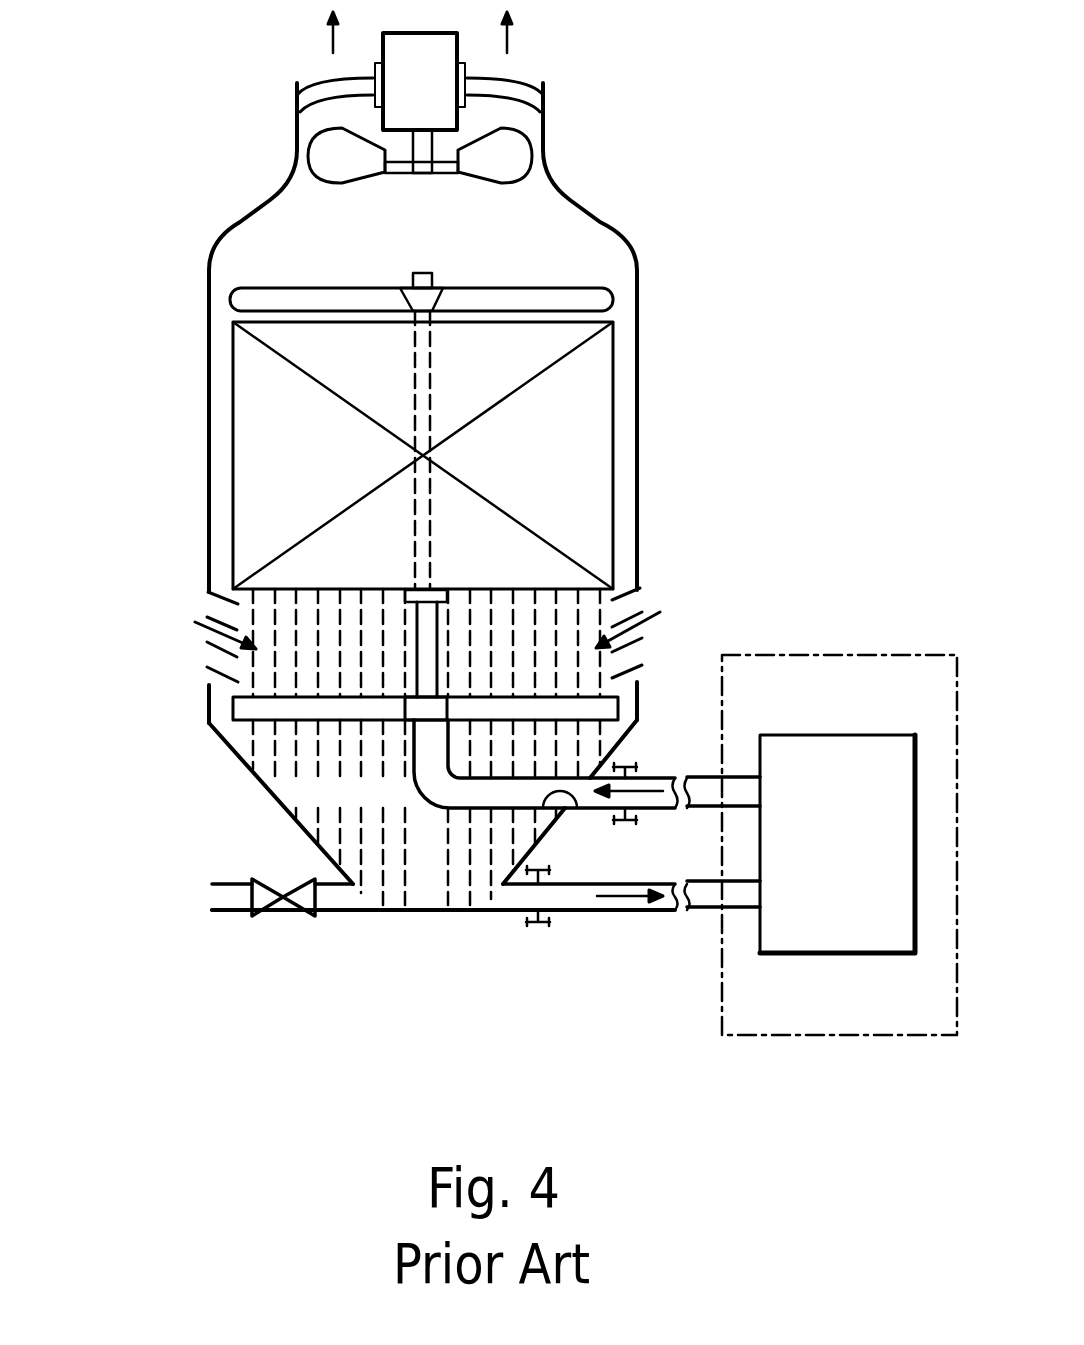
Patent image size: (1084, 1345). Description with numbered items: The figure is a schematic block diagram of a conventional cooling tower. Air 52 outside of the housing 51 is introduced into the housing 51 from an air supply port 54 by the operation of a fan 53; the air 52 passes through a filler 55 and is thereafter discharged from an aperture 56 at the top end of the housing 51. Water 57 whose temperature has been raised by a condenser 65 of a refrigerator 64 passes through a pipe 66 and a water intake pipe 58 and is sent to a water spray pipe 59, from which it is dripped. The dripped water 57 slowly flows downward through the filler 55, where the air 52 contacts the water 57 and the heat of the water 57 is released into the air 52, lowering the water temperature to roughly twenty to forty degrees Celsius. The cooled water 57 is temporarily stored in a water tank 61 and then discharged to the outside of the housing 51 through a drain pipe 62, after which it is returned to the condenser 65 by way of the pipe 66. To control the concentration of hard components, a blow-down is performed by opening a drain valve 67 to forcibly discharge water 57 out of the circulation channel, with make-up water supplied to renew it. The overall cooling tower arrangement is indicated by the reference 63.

The housing 51 is at (617, 228).
The air 52 is at (197, 629).
The fan 53 is at (519, 152).
The air supply port 54 is at (209, 593).
The filler 55 is at (597, 432).
The aperture 56 is at (540, 82).
The water 57 is at (318, 802).
The water intake pipe 58 is at (573, 810).
The water spray pipe 59 is at (612, 298).
The water tank 61 is at (232, 752).
The drain pipe 62 is at (505, 912).
The cooling tower 63 is at (197, 242).
The refrigerator 64 is at (805, 1035).
The condenser 65 is at (838, 936).
The pipe 66 is at (653, 778).
The drain valve 67 is at (267, 908).